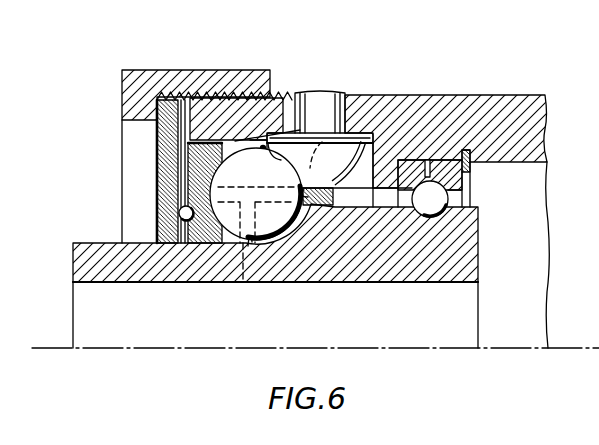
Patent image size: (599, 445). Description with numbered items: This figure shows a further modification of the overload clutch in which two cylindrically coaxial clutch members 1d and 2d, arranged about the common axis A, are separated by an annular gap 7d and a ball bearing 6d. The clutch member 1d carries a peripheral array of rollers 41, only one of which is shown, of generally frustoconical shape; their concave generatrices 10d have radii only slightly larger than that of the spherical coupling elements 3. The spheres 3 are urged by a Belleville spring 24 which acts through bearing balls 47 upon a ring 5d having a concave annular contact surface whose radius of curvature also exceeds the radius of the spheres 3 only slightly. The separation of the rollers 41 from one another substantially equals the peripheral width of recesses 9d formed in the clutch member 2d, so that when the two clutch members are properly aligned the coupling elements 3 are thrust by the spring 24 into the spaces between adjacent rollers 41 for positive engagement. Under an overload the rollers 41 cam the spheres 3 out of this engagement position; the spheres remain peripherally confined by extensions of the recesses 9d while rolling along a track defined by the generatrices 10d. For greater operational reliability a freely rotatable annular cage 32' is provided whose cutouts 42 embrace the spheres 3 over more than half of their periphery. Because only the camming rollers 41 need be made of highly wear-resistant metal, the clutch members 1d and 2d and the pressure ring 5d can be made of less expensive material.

The clutch member 1d is at (467, 95).
The clutch member 2d is at (465, 265).
The spherical coupling element 3 is at (228, 228).
The ring 5d is at (207, 150).
The ball bearing 6d is at (430, 199).
The annular gap 7d is at (386, 200).
The recess 9d is at (300, 208).
The generatrix 10d is at (260, 146).
The Belleville spring 24 is at (158, 152).
The annular cage 32' is at (325, 255).
The roller 41 is at (344, 135).
The cutout 42 is at (243, 284).
The bearing ball 47 is at (179, 211).
The axis A is at (45, 349).